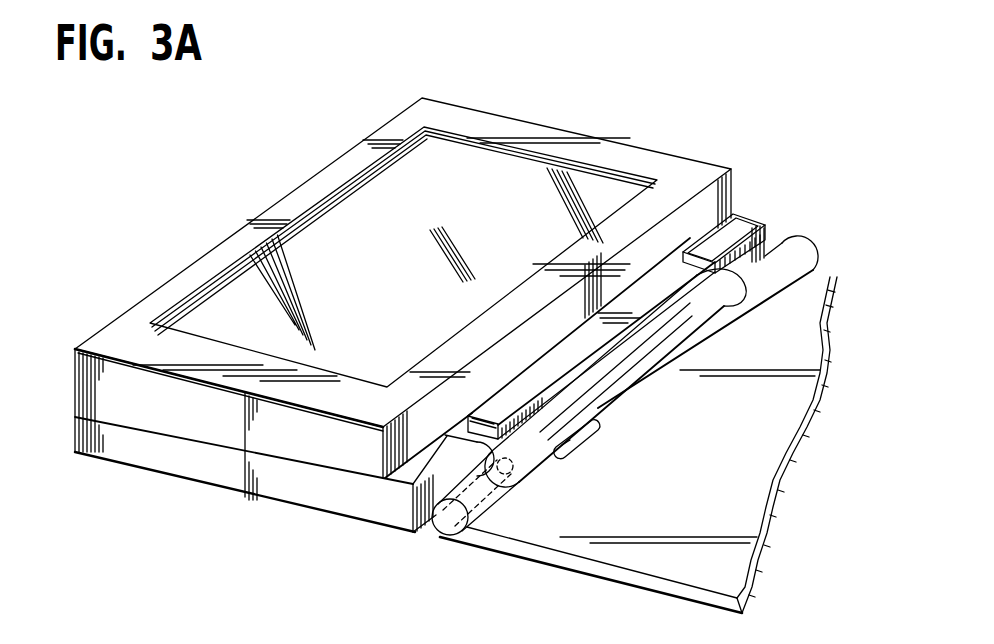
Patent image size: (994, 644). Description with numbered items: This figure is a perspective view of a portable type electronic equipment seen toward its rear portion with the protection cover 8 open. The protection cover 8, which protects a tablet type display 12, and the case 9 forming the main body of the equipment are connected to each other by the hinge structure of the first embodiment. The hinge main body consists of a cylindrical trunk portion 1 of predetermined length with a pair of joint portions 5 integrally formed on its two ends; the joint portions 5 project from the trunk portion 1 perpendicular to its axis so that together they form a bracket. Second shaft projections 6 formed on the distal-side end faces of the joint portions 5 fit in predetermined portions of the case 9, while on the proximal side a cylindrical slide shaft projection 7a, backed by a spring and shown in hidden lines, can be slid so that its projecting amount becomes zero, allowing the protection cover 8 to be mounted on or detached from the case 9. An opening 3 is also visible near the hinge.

The trunk portion 1 is at (700, 335).
The slot 3 is at (560, 455).
The joint portion 5 is at (717, 285).
The second shaft projection 6 is at (413, 517).
The slide shaft projection 7a is at (490, 488).
The protection cover 8 is at (600, 569).
The case 9 is at (233, 474).
The tablet type display 12 is at (488, 190).